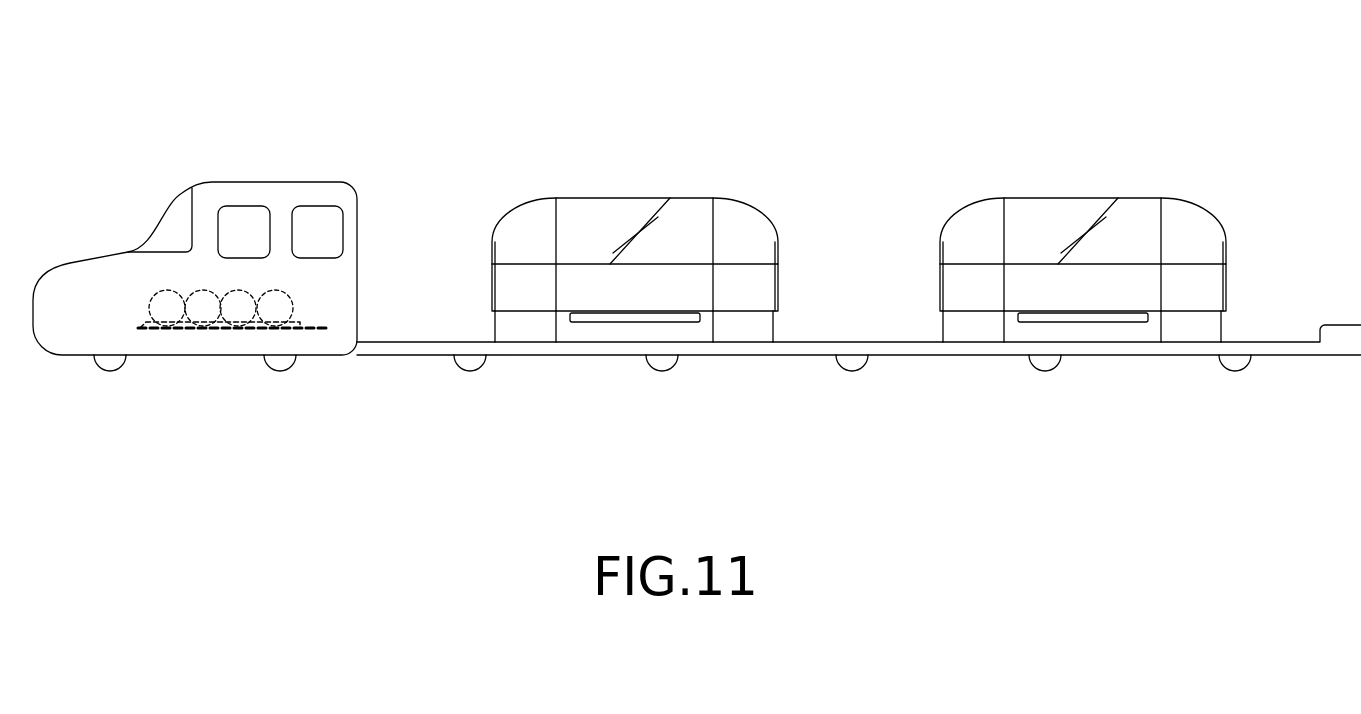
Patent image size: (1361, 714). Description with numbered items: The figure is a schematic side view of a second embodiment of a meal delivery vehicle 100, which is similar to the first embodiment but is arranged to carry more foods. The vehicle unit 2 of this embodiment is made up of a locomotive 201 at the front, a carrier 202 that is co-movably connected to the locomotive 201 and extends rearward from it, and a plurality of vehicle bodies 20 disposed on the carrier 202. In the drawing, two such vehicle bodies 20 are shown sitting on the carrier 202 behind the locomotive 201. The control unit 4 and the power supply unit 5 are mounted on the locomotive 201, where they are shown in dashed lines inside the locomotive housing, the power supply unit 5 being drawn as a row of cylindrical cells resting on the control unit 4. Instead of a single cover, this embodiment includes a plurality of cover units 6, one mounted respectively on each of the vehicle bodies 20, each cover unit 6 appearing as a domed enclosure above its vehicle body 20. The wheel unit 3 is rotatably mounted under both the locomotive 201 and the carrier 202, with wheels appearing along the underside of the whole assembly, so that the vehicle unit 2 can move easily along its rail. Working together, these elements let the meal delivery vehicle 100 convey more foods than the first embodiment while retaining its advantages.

The meal delivery vehicle 100 is at (772, 120).
The vehicle unit 2 is at (280, 181).
The locomotive 201 is at (195, 268).
The carrier 202 is at (838, 342).
The wheel unit 3 is at (472, 392).
The control unit 4 is at (214, 340).
The power supply unit 5 is at (138, 303).
The cover unit 6 is at (605, 184).
The vehicle body 20 is at (495, 323).